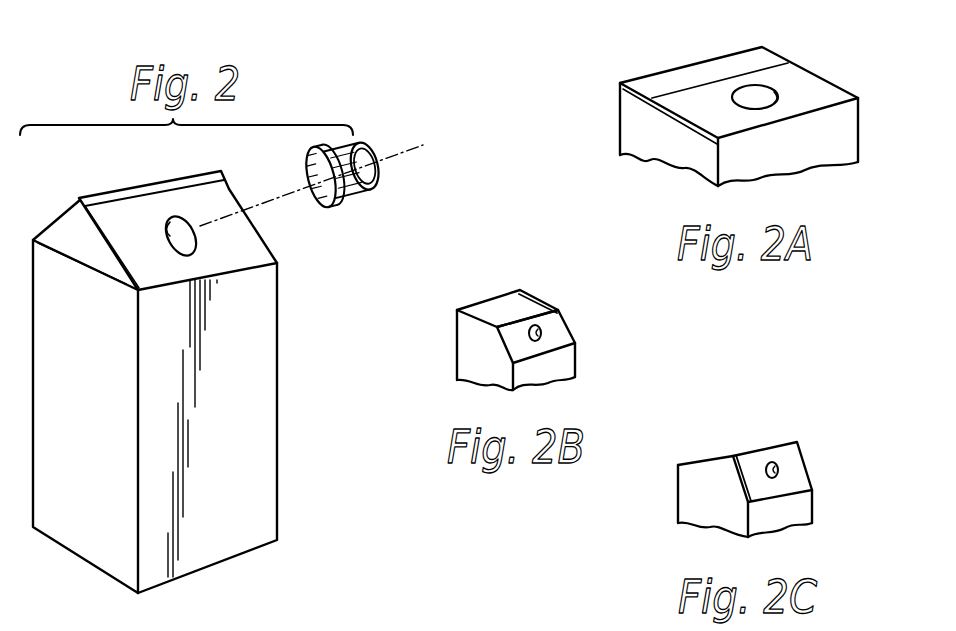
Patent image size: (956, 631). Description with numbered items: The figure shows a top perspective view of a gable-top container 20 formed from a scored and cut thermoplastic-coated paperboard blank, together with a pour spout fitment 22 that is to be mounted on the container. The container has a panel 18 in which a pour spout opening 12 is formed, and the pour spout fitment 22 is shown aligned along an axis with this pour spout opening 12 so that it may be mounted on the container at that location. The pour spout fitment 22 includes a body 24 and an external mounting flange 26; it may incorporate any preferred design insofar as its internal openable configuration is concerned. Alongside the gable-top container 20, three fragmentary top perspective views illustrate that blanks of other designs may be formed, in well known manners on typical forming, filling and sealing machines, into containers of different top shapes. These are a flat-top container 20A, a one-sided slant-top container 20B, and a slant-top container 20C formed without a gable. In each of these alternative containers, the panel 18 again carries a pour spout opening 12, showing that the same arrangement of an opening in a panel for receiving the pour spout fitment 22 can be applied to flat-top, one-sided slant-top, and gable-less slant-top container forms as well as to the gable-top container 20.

In FIG. 2, the pour spout opening 12 is at (166, 238).
In FIG. 2A, the pour spout opening 12 is at (776, 96).
In FIG. 2B, the pour spout opening 12 is at (542, 335).
In FIG. 2C, the pour spout opening 12 is at (781, 472).
In FIG. 2, the panel 18 is at (232, 249).
In FIG. 2A, the panel 18 is at (687, 108).
In FIG. 2B, the panel 18 is at (553, 318).
In FIG. 2C, the panel 18 is at (788, 457).
In FIG. 2, the gable-top container 20 is at (87, 184).
In FIG. 2A, the flat-top container 20A is at (681, 51).
In FIG. 2B, the one-sided slant-top container 20B is at (490, 288).
In FIG. 2C, the slant-top container 20C is at (761, 430).
In FIG. 2, the pour spout fitment 22 is at (297, 156).
In FIG. 2, the body 24 is at (373, 188).
In FIG. 2, the external mounting flange 26 is at (317, 206).